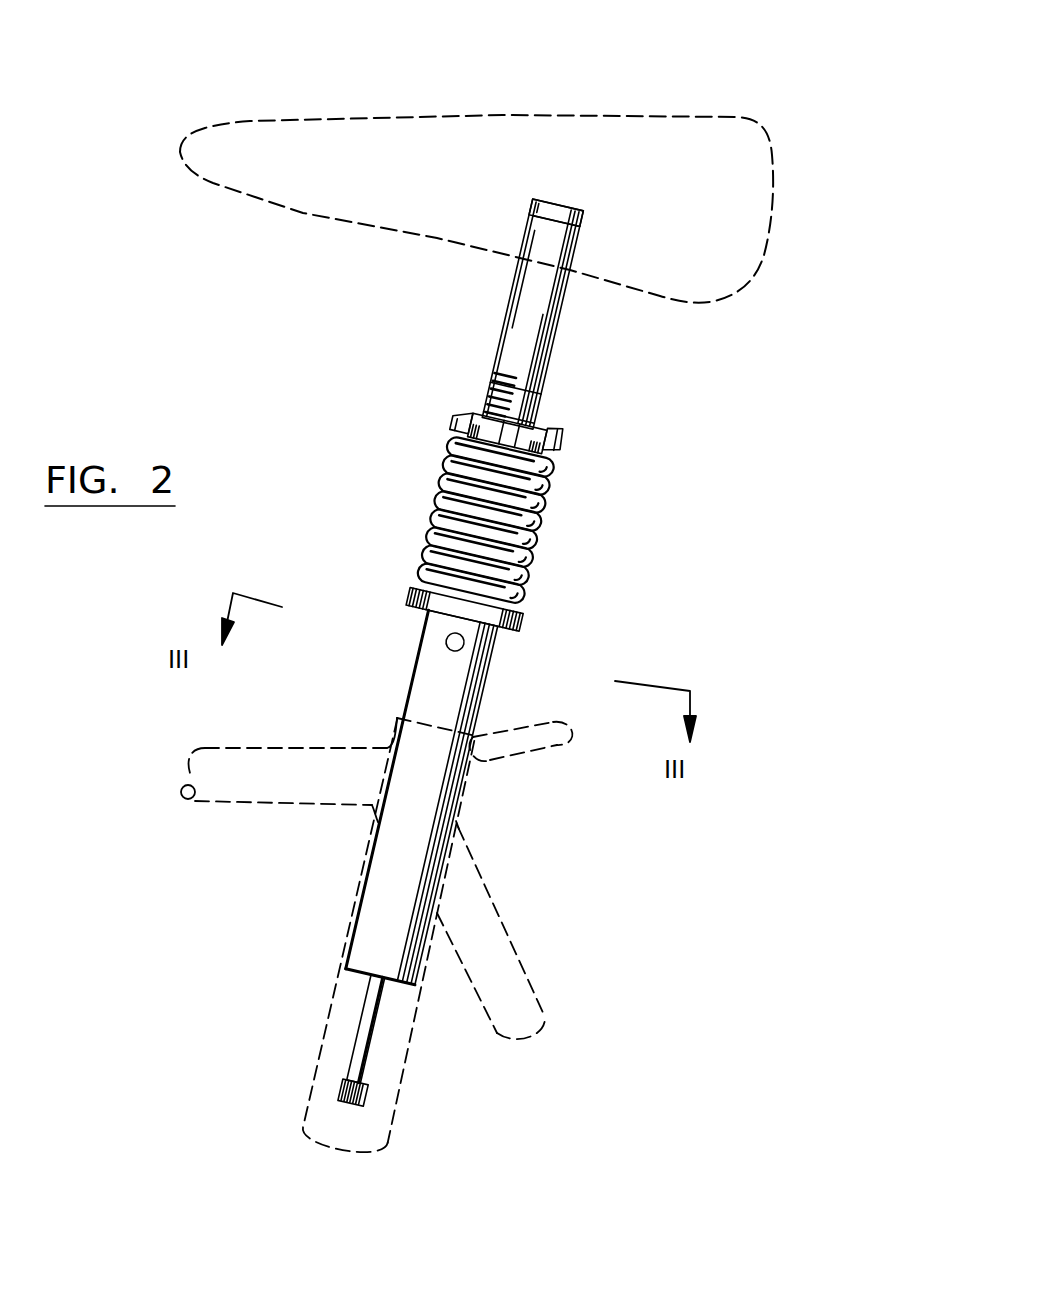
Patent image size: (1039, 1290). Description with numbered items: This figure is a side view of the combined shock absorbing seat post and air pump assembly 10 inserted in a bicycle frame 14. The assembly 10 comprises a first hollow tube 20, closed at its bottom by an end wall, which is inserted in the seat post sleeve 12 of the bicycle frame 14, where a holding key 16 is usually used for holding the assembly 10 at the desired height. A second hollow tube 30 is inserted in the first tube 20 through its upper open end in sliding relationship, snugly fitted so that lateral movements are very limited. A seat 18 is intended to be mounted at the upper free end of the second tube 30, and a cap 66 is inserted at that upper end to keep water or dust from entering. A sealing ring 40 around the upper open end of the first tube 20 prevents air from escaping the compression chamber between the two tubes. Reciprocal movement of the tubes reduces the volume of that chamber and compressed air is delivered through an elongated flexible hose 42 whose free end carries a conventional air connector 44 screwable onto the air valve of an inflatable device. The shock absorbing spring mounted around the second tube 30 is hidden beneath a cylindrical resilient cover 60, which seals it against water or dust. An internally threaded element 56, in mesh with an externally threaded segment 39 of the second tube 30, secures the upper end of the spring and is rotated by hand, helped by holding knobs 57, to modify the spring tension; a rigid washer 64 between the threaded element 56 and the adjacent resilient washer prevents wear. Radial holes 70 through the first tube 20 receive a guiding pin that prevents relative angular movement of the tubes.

The combined shock absorbing seat post and air pump assembly 10 is at (501, 651).
The seat post sleeve 12 is at (350, 922).
The bicycle frame 14 is at (220, 748).
The holding key 16 is at (555, 737).
The seat 18 is at (658, 122).
The first hollow tube 20 is at (410, 690).
The second hollow tube 30 is at (566, 347).
The externally threaded segment 39 is at (536, 405).
The sealing ring 40 is at (527, 622).
The elongated flexible hose 42 is at (362, 1008).
The air connector 44 is at (340, 1092).
The internally threaded element 56 is at (562, 445).
The holding knobs 57 is at (455, 414).
The cylindrical resilient cover 60 is at (437, 512).
The rigid washer 64 is at (455, 432).
The cap 66 is at (586, 212).
The radial holes 70 is at (445, 642).